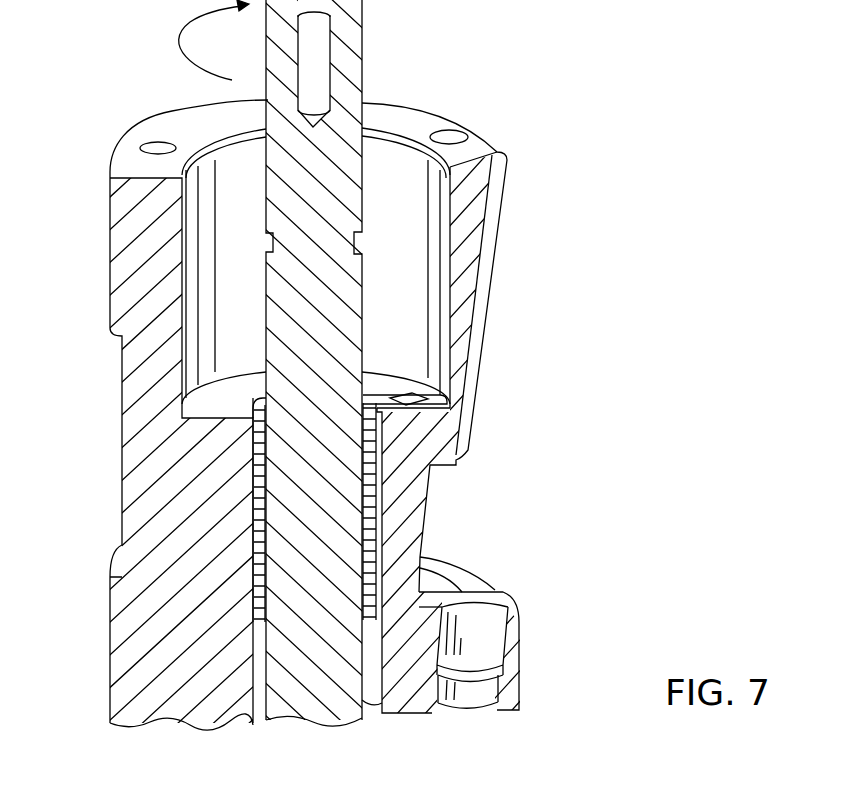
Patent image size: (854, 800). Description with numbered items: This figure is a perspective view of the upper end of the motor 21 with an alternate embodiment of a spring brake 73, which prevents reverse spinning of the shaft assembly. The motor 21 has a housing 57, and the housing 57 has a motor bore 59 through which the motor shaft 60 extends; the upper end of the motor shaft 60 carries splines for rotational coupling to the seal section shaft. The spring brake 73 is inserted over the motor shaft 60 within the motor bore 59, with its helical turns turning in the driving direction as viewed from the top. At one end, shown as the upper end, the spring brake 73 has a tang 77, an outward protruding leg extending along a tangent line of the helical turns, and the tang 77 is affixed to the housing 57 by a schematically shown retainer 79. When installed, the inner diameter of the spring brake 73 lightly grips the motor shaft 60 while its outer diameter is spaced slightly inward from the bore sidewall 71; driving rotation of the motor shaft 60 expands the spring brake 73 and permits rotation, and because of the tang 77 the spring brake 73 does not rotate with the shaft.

The motor 21 is at (527, 628).
The housing 57 is at (120, 633).
The motor bore 59 is at (255, 682).
The motor shaft 60 is at (363, 302).
The bore sidewall 71 is at (375, 705).
The spring brake 73 is at (373, 531).
The tang 77 is at (385, 395).
The retainer 79 is at (414, 399).